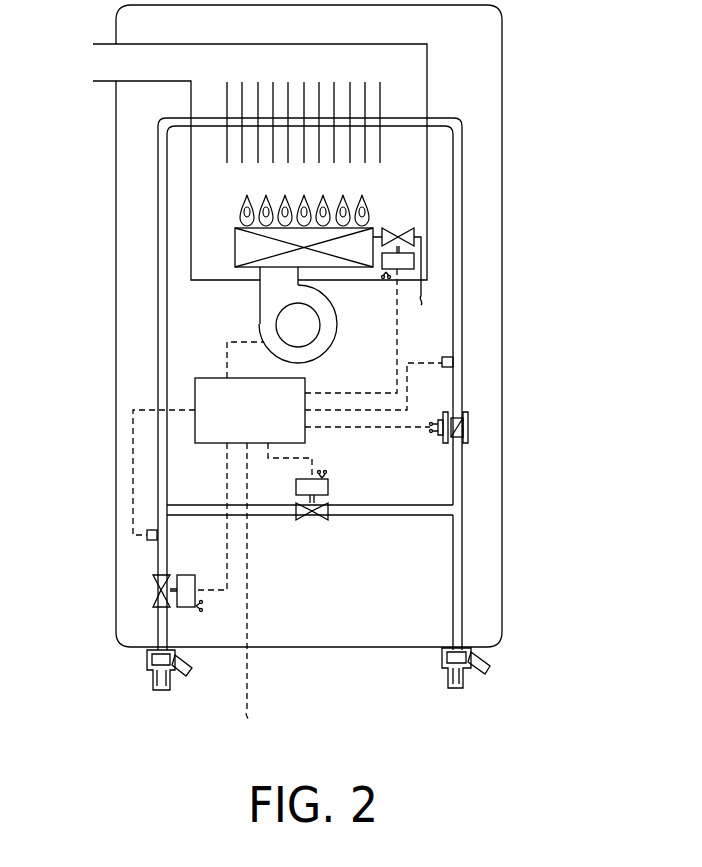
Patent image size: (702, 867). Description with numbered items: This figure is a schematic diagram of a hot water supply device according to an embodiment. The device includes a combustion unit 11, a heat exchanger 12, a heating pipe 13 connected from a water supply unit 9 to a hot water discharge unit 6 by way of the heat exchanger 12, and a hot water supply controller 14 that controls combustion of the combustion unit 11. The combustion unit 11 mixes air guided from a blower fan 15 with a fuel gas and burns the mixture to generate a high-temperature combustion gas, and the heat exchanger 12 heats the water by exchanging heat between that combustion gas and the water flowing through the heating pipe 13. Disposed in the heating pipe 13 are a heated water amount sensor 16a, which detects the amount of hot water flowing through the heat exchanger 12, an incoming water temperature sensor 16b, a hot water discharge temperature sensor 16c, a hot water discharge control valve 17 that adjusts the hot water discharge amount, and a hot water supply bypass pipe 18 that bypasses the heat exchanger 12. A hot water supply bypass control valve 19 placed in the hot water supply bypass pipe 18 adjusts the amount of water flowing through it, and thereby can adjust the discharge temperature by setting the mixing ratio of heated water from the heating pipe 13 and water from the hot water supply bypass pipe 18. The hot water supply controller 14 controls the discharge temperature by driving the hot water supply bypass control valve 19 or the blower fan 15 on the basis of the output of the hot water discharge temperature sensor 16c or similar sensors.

The hot water discharge unit 6 is at (147, 660).
The water supply unit 9 is at (465, 675).
The combustion unit 11 is at (219, 213).
The heat exchanger 12 is at (212, 155).
The heating pipe 13 is at (462, 188).
The hot water supply controller 14 is at (270, 424).
The blower fan 15 is at (258, 318).
The heated water amount sensor 16a is at (468, 427).
The incoming water temperature sensor 16b is at (447, 357).
The hot water discharge temperature sensor 16c is at (152, 540).
The hot water discharge control valve 17 is at (153, 580).
The hot water supply bypass pipe 18 is at (397, 518).
The hot water supply bypass control valve 19 is at (321, 520).